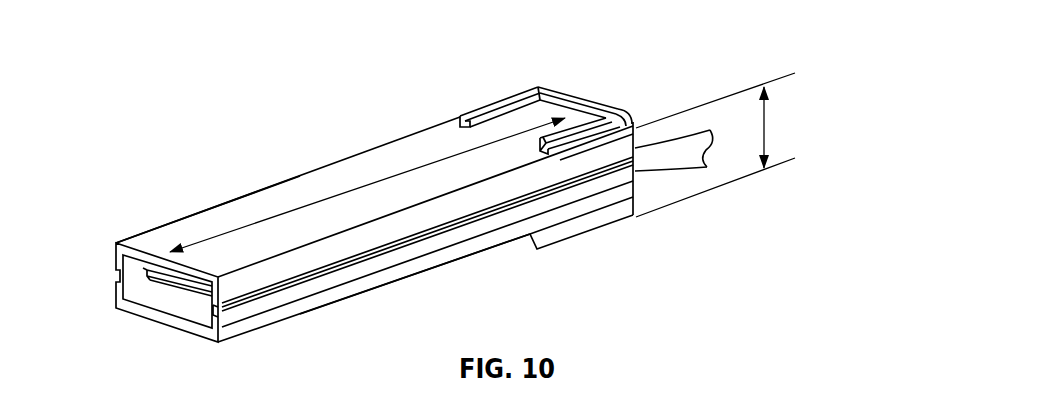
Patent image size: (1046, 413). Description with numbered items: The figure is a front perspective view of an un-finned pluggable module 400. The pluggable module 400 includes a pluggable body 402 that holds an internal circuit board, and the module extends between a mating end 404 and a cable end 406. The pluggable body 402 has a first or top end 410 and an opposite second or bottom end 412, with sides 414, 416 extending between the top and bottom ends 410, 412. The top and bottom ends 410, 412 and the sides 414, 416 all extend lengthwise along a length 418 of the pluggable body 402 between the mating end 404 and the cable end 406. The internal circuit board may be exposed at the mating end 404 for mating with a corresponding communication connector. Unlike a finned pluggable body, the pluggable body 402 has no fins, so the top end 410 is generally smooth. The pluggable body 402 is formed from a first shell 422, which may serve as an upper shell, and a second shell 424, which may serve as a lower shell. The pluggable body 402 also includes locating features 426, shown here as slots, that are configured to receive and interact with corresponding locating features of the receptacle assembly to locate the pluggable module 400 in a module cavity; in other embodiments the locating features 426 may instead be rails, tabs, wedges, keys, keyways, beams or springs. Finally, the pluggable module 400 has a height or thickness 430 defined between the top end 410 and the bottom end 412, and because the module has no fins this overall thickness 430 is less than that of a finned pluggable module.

The pluggable module 400 is at (291, 110).
The pluggable body 402 is at (392, 163).
The mating end 404 is at (183, 323).
The cable end 406 is at (635, 195).
The top end 410 is at (423, 140).
The bottom end 412 is at (403, 282).
The side 414 is at (473, 230).
The side 416 is at (116, 246).
The length 418 is at (277, 217).
The first shell 422 is at (600, 153).
The second shell 424 is at (587, 218).
The locating features 426 is at (300, 277).
The thickness 430 is at (765, 131).